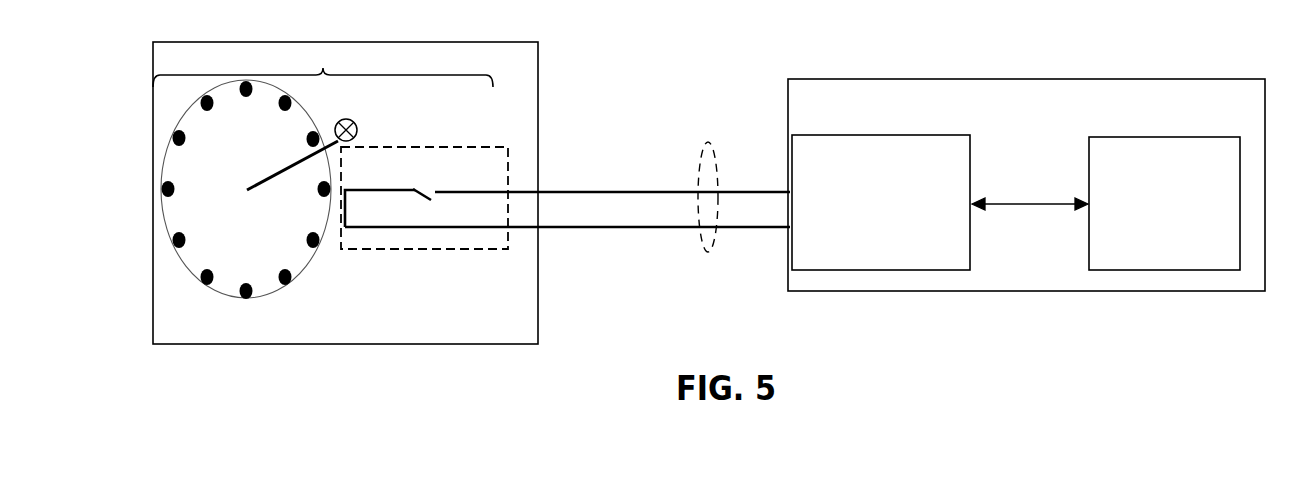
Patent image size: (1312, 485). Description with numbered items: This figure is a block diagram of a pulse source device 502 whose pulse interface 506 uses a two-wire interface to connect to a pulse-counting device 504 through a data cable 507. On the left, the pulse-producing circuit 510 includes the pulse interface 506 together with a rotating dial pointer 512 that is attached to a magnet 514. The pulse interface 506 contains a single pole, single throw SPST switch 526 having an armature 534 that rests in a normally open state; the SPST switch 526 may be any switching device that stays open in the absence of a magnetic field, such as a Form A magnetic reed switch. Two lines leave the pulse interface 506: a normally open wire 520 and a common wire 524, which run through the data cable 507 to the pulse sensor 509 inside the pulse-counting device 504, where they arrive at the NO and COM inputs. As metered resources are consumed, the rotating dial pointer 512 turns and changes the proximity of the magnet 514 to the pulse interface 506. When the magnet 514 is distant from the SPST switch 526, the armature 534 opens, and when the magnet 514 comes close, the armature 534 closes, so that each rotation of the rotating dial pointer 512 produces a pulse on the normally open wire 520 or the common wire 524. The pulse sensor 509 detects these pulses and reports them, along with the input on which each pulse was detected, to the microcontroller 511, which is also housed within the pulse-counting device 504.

The pulse source device 502 is at (555, 50).
The pulse-counting device 504 is at (1147, 107).
The pulse interface 506 is at (446, 133).
The data cable 507 is at (703, 143).
The pulse sensor 509 is at (896, 189).
The pulse-producing circuit 510 is at (323, 69).
The microcontroller 511 is at (1182, 222).
The rotating dial pointer 512 is at (231, 314).
The magnet 514 is at (350, 110).
The normally open wire 520 is at (549, 175).
The common wire 524 is at (592, 233).
The SPST switch 526 is at (420, 156).
The armature 534 is at (425, 207).